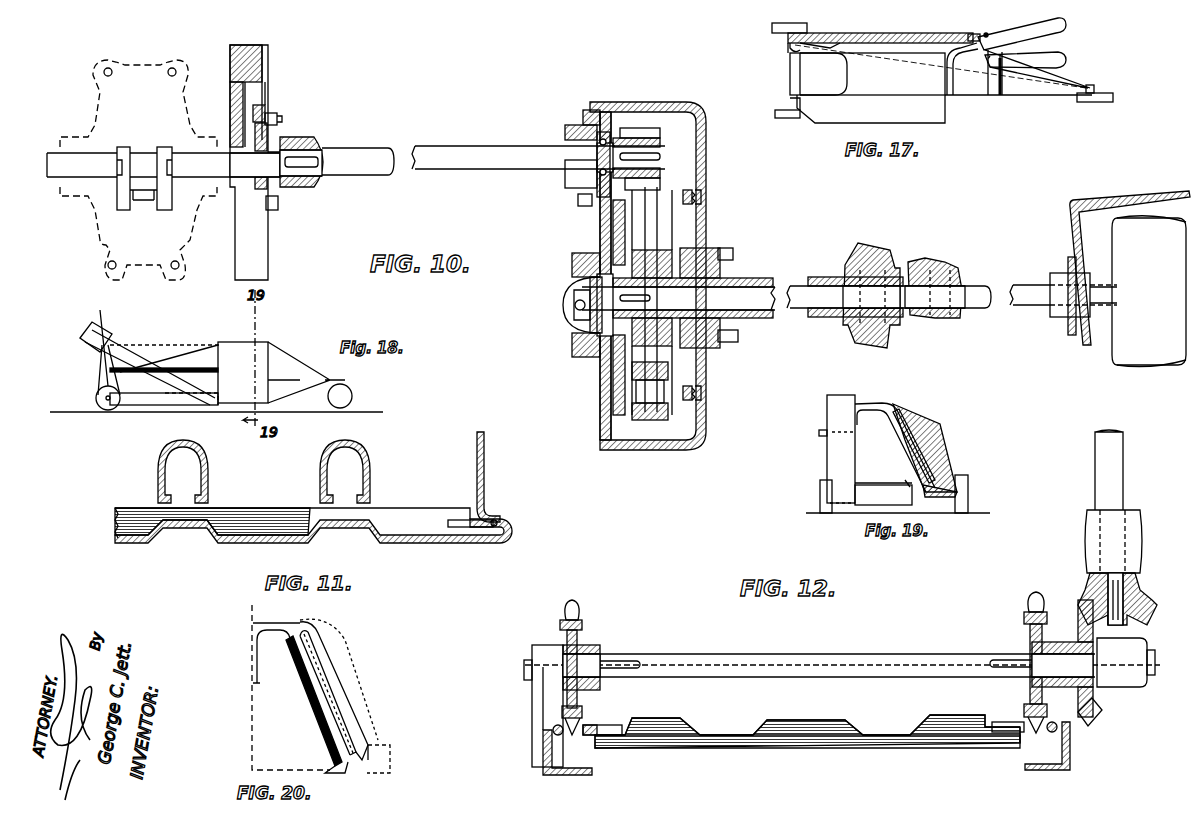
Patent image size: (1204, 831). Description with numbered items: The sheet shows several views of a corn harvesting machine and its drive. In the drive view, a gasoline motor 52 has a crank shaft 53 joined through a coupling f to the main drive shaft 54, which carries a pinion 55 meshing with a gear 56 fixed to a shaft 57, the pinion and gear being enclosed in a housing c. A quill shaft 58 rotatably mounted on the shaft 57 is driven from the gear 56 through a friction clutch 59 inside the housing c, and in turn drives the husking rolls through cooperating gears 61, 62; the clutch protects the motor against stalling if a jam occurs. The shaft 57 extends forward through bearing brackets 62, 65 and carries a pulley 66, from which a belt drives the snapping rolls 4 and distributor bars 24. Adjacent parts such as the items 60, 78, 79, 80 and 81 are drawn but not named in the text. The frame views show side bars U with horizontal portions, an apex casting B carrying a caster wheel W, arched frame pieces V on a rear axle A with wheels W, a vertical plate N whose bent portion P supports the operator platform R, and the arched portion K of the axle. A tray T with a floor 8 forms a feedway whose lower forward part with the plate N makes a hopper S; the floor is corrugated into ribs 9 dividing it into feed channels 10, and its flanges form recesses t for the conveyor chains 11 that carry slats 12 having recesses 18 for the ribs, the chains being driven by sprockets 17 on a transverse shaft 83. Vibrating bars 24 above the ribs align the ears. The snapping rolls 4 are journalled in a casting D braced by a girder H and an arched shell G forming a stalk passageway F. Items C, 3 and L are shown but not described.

In FIG. 10, the motor 52 is at (103, 220).
In FIG. 10, the crank shaft 53 is at (167, 205).
In FIG. 10, the main drive shaft 54 is at (351, 163).
In FIG. 10, the coupling f is at (263, 100).
In FIG. 10, the pinion 55 is at (641, 133).
In FIG. 10, the gear 56 is at (640, 347).
In FIG. 10, the shaft 57 is at (773, 313).
In FIG. 10, the quill shaft 58 is at (760, 277).
In FIG. 10, the friction clutch 59 is at (658, 257).
In FIG. 10, the adjusting bolt and spring 60 is at (693, 197).
In FIG. 10, the housing c is at (703, 208).
In FIG. 10, the gear 61 is at (877, 253).
In FIG. 10, the gear 62 is at (955, 268).
In FIG. 10, the bearing bracket 65 is at (1058, 315).
In FIG. 10, the pulley 66 is at (1140, 360).
In FIG. 10, the plate N is at (1118, 203).
In FIG. 20, the plate N is at (252, 700).
In FIG. 10, the portion of the plate P is at (1085, 347).
In FIG. 19, the portion of the plate P is at (840, 395).
In FIG. 17, the wheel W is at (772, 28).
In FIG. 18, the wheel W is at (104, 410).
In FIG. 19, the wheel W is at (820, 490).
In FIG. 17, the girder H is at (880, 38).
In FIG. 18, the girder H is at (168, 405).
In FIG. 20, the girder H is at (392, 752).
In FIG. 19, the girder H is at (945, 497).
In FIG. 17, the arched shell G is at (825, 45).
In FIG. 18, the arched shell G is at (160, 350).
In FIG. 20, the arched shell G is at (322, 634).
In FIG. 19, the arched shell G is at (920, 414).
In FIG. 17, the arched portion of the axle K is at (790, 48).
In FIG. 17, the arched frame piece V is at (802, 82).
In FIG. 18, the arched frame piece V is at (140, 350).
In FIG. 17, the platform R is at (940, 120).
In FIG. 18, the platform R is at (185, 370).
In FIG. 19, the platform R is at (820, 433).
In FIG. 17, the rear axle A is at (790, 100).
In FIG. 18, the rear axle A is at (110, 402).
In FIG. 17, the casting D is at (948, 70).
In FIG. 20, the casting D is at (275, 625).
In FIG. 19, the casting D is at (868, 405).
In FIG. 17, the connector C is at (985, 33).
In FIG. 17, the arm 3 is at (1063, 22).
In FIG. 17, the apex casting B is at (1090, 88).
In FIG. 18, the lever L is at (265, 400).
In FIG. 18, the tray T is at (118, 345).
In FIG. 11, the tray T is at (486, 480).
In FIG. 19, the tray T is at (860, 482).
In FIG. 18, the side bar U is at (100, 350).
In FIG. 19, the side bar U is at (856, 505).
In FIG. 12, the side bar U is at (553, 755).
In FIG. 11, the longitudinal recess t is at (505, 517).
In FIG. 11, the slat 12 is at (385, 510).
In FIG. 12, the slat 12 is at (800, 742).
In FIG. 11, the feed channel 10 is at (262, 530).
In FIG. 11, the laterally vibrating bar 24 is at (320, 455).
In FIG. 11, the longitudinal rib 9 is at (178, 532).
In FIG. 11, the recess 18 is at (207, 545).
In FIG. 12, the recess 18 is at (720, 725).
In FIG. 11, the endless chain 11 is at (490, 530).
In FIG. 12, the endless chain 11 is at (605, 725).
In FIG. 20, the snapping roll 4 is at (305, 712).
In FIG. 19, the snapping roll 4 is at (895, 428).
In FIG. 20, the passageway F is at (325, 695).
In FIG. 19, the passageway F is at (897, 408).
In FIG. 20, the hopper S is at (287, 738).
In FIG. 19, the floor 8 is at (876, 484).
In FIG. 12, the transverse shaft 83 is at (805, 658).
In FIG. 12, the sprocket 17 is at (582, 620).
In FIG. 12, the shaft 78 is at (1122, 475).
In FIG. 12, the collar 79 is at (1144, 540).
In FIG. 12, the gear 80 is at (1148, 595).
In FIG. 12, the pin 81 is at (1097, 716).